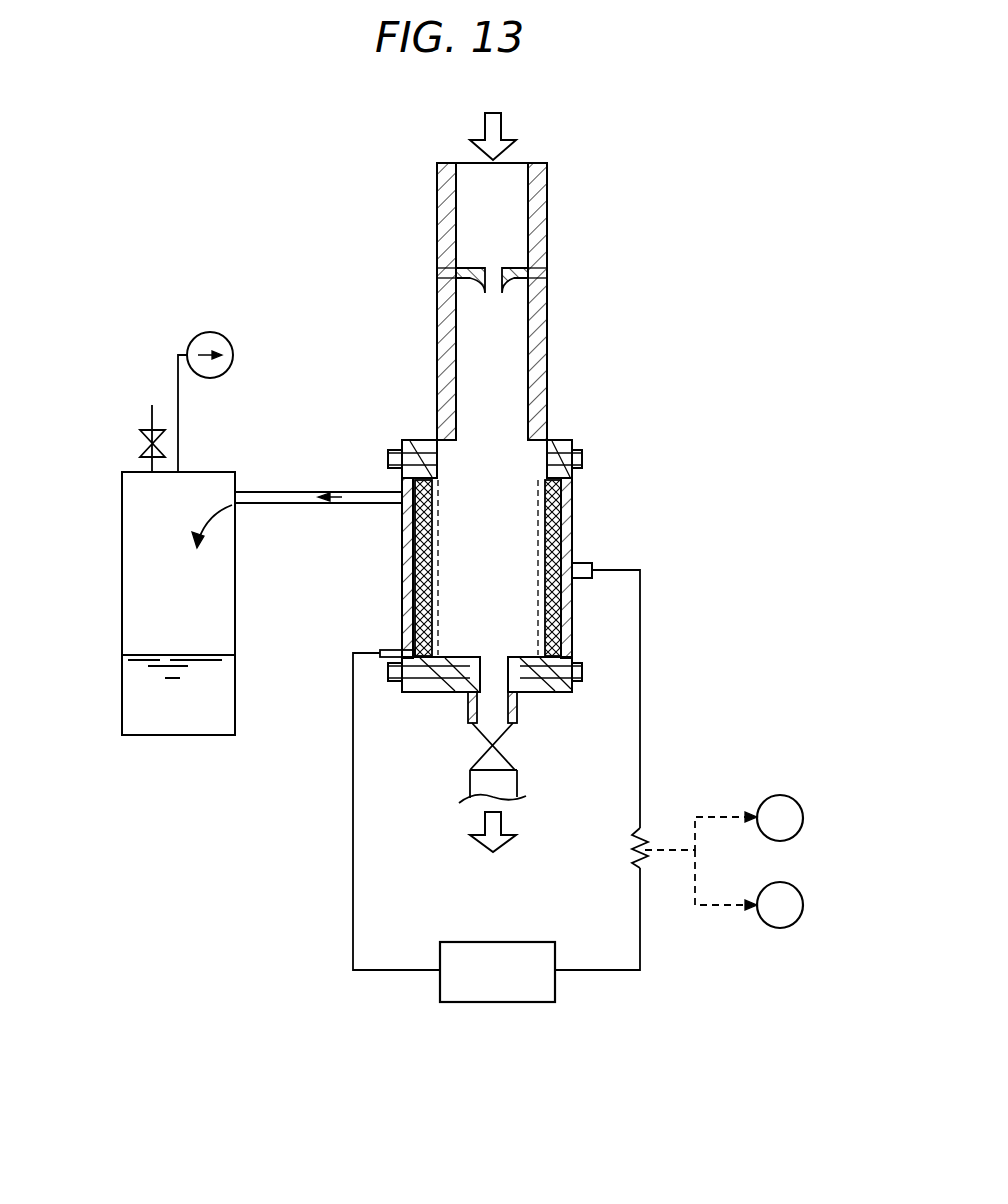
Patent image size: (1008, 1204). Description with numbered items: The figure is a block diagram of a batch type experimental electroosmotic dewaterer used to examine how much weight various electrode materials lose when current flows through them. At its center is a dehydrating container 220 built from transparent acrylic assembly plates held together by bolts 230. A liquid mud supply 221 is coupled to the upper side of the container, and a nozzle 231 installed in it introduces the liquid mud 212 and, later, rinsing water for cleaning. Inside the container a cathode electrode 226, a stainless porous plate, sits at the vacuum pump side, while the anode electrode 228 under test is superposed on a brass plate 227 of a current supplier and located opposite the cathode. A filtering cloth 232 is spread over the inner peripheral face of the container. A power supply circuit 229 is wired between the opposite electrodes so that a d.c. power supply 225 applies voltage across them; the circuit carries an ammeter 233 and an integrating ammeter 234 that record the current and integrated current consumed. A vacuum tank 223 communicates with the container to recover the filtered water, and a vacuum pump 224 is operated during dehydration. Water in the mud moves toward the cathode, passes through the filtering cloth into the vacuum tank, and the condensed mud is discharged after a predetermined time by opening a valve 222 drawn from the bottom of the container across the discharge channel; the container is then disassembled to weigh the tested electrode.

The liquid mud 212 is at (493, 120).
The liquid mud supply 221 is at (540, 340).
The nozzle 231 is at (512, 266).
The bolts 230 is at (583, 462).
The dehydrating container 220 is at (402, 548).
The cathode electrode 226 is at (425, 593).
The anode electrode 228 is at (548, 630).
The filtering cloth 232 is at (432, 585).
The brass plate 227 is at (568, 540).
The valve 222 is at (508, 738).
The power supply circuit 229 is at (353, 828).
The d.c. power supply 225 is at (530, 1005).
The ammeter 233 is at (803, 818).
The integrating ammeter 234 is at (803, 905).
The vacuum tank 223 is at (122, 592).
The vacuum pump 224 is at (233, 360).